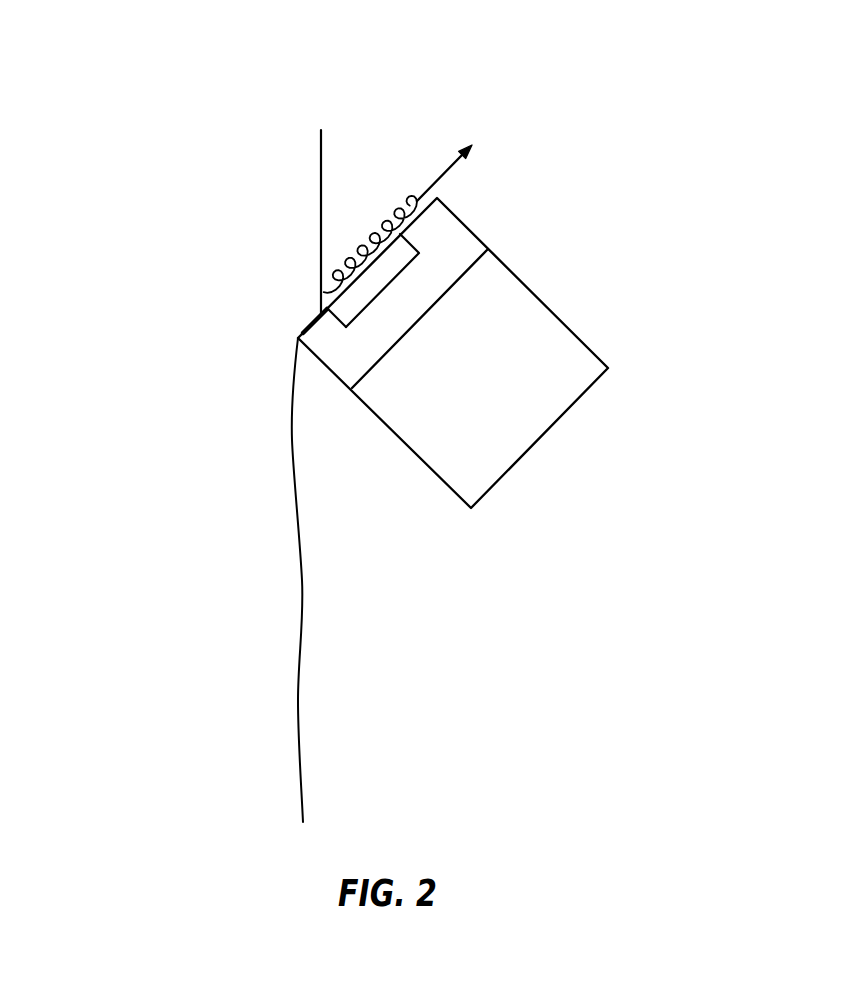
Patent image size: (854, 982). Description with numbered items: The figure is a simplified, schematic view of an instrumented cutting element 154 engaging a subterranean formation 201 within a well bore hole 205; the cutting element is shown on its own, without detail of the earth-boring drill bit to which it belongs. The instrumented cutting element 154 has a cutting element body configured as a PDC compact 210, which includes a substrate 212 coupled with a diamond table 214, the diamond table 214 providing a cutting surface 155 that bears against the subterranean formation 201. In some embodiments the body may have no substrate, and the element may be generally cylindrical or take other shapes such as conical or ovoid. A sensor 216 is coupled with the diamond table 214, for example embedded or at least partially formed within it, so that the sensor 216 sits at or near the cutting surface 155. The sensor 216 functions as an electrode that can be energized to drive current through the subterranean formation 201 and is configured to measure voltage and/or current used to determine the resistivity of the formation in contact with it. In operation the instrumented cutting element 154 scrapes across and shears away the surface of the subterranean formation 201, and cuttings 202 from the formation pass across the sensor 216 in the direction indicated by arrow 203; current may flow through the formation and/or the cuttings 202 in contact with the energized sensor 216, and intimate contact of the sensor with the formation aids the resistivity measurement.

The subterranean formation 201 is at (164, 484).
The cutting surface 155 is at (307, 325).
The PDC compact 210 is at (458, 185).
The substrate 212 is at (496, 387).
The diamond table 214 is at (417, 316).
The sensor 216 is at (338, 320).
The cuttings 202 is at (381, 226).
The arrow 203 is at (446, 172).
The instrumented cutting element 154 is at (388, 486).
The well bore hole 205 is at (388, 616).